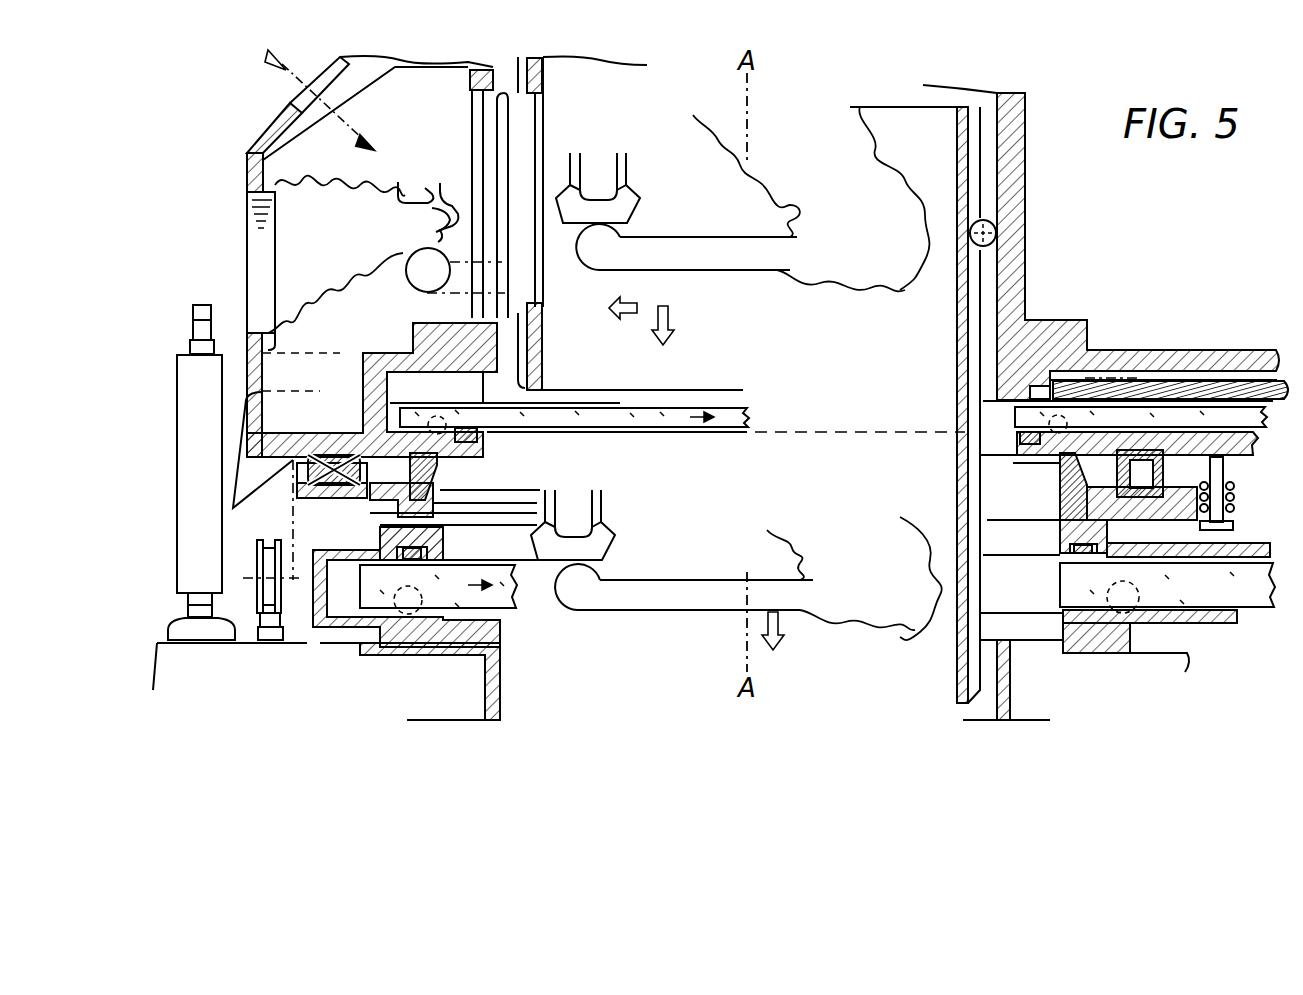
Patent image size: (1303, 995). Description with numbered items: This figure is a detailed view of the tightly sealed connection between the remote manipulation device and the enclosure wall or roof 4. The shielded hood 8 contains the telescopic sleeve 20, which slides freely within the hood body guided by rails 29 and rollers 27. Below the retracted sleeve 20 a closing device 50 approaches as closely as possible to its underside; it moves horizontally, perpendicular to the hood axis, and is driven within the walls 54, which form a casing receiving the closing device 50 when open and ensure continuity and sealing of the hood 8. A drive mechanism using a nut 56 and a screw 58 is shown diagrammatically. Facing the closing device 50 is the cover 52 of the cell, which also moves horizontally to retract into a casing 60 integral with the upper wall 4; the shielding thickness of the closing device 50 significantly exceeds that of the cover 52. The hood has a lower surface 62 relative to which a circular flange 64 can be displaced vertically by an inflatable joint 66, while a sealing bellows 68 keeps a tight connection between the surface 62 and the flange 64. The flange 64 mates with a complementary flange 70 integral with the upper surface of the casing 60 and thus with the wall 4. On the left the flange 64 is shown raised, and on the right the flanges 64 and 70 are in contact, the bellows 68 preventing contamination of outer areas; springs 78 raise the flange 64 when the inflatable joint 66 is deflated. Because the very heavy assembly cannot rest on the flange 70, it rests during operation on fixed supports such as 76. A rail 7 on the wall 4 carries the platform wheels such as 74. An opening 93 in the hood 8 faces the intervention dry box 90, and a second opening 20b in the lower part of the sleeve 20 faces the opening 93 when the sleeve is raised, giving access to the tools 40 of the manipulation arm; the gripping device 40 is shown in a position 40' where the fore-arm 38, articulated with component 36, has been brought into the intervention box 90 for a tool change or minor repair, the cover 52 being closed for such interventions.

The enclosure wall 4 is at (437, 698).
The rail 7 is at (262, 628).
The hood 8 is at (1023, 117).
The sleeve 20 is at (543, 75).
The second opening 20b is at (543, 273).
The rollers 27 is at (995, 228).
The rails 29 is at (977, 173).
The articulated component 36 is at (905, 168).
The fore-arm 38 is at (693, 237).
The tool 40 is at (621, 175).
The gripping device position 40' is at (447, 214).
The closing device 50 is at (577, 410).
The cover 52 is at (480, 598).
The walls 54 is at (363, 380).
The nut 56 is at (1108, 378).
The screw 58 is at (1244, 383).
The casing 60 is at (1233, 553).
The lower surface 62 is at (370, 487).
The circular flange 64 is at (363, 503).
The inflatable joint 66 is at (330, 453).
The sealing bellows 68 is at (437, 468).
The complementary flange 70 is at (440, 527).
The wheels 74 is at (283, 600).
The fixed supports 76 is at (223, 342).
The springs 78 is at (1270, 481).
The intervention box 90 is at (262, 152).
The opening 93 is at (487, 110).